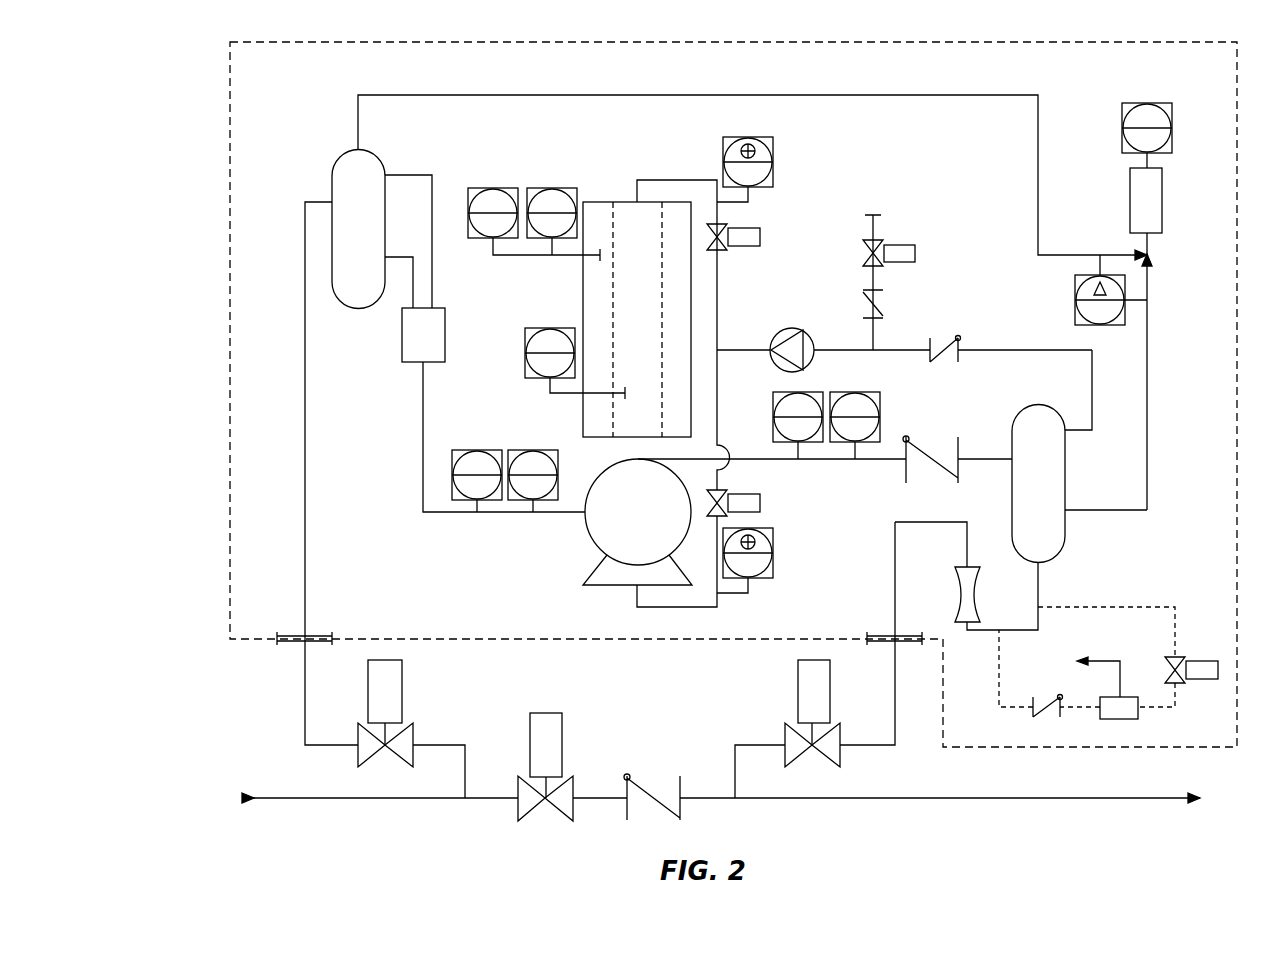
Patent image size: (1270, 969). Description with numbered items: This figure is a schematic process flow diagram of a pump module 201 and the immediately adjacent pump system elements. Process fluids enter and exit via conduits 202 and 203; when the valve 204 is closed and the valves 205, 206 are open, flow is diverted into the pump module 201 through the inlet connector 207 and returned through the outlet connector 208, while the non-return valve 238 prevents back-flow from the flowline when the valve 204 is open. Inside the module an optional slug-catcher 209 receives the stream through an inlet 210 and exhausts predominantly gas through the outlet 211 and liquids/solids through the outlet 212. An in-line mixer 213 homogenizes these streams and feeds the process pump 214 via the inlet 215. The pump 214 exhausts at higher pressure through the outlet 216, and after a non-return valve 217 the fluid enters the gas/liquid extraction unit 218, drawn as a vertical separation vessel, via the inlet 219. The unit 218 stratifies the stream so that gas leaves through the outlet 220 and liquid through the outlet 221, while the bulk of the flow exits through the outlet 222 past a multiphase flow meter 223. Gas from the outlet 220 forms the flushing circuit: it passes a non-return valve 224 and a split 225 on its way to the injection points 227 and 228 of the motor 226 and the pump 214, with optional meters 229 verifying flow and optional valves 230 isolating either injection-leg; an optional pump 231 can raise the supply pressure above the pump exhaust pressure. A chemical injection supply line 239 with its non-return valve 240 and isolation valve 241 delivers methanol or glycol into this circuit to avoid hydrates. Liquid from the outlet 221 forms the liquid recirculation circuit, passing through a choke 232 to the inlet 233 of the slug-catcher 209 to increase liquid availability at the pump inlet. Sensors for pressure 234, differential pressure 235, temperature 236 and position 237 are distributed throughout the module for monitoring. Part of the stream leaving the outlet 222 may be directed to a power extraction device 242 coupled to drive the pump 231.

The pump module 201 is at (230, 352).
The conduit 202 is at (265, 798).
The conduit 203 is at (1112, 798).
The valve 204 is at (548, 713).
The valve 205 is at (402, 690).
The valve 206 is at (798, 692).
The inlet connector 207 is at (318, 636).
The outlet connector 208 is at (875, 636).
The slug-catcher 209 is at (350, 178).
The inlet 210 is at (332, 204).
The outlet 211 is at (388, 178).
The outlet 212 is at (388, 257).
The in-line mixer 213 is at (410, 362).
The process pump 214 is at (585, 530).
The inlet 215 is at (640, 513).
The outlet 216 is at (641, 459).
The non-return valve 217 is at (928, 450).
The gas/liquid extraction unit 218 is at (1033, 406).
The inlet 219 is at (1012, 460).
The outlet 220 is at (1065, 438).
The outlet 221 is at (1066, 515).
The outlet 222 is at (1040, 565).
The multiphase flow meter 223 is at (965, 567).
The non-return valve 224 is at (955, 345).
The split 225 is at (720, 350).
The motor 226 is at (657, 331).
The injection point 227 is at (634, 200).
The injection point 228 is at (637, 590).
The meter 229 is at (748, 140).
The valve 230 is at (732, 248).
The pump 231 is at (800, 332).
The choke 232 is at (1130, 200).
The inlet 233 is at (358, 152).
The pressure sensor/transmitter 234 is at (505, 190).
The differential pressure sensor/transmitter 235 is at (1075, 302).
The temperature sensor/transmitter 236 is at (533, 190).
The position sensor/transmitter 237 is at (552, 328).
The non-return valve 238 is at (645, 778).
The chemical injection supply line 239 is at (873, 222).
The non-return valve 240 is at (870, 302).
The isolation valve 241 is at (900, 245).
The device 242 is at (1140, 720).